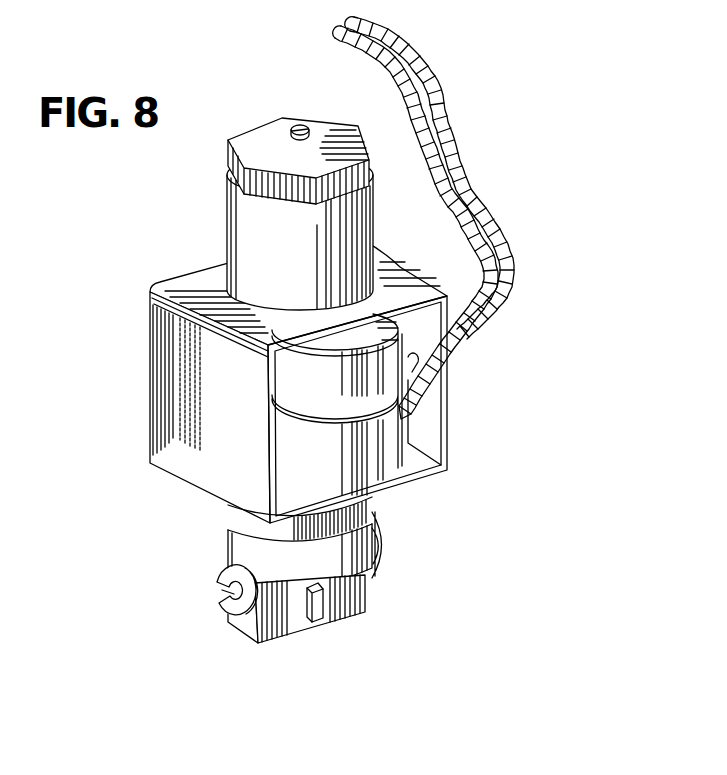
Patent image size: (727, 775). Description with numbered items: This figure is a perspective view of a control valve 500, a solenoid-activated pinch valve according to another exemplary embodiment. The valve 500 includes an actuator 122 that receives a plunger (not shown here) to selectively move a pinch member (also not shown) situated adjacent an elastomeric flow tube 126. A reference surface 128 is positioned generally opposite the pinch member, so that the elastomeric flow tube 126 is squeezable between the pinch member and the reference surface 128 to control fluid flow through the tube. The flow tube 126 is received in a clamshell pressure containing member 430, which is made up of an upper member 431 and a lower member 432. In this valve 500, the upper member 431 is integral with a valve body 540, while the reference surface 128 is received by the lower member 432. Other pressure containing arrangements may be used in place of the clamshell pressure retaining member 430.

The control valve 500 is at (494, 160).
The actuator 122 is at (178, 425).
The pressure containing member 430 is at (392, 588).
The upper member 431 is at (225, 553).
The lower member 432 is at (230, 620).
The elastomeric flow tube 126 is at (256, 582).
The reference surface 128 is at (327, 623).
The valve body 540 is at (378, 530).